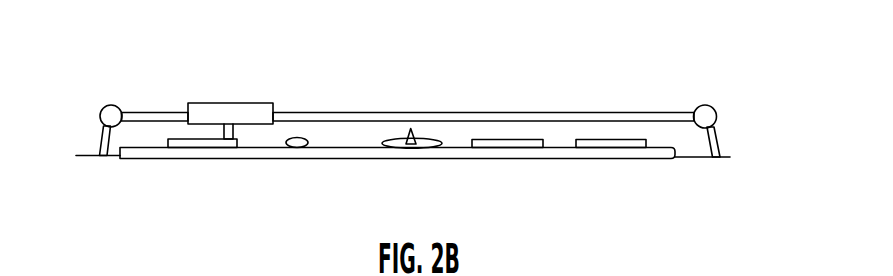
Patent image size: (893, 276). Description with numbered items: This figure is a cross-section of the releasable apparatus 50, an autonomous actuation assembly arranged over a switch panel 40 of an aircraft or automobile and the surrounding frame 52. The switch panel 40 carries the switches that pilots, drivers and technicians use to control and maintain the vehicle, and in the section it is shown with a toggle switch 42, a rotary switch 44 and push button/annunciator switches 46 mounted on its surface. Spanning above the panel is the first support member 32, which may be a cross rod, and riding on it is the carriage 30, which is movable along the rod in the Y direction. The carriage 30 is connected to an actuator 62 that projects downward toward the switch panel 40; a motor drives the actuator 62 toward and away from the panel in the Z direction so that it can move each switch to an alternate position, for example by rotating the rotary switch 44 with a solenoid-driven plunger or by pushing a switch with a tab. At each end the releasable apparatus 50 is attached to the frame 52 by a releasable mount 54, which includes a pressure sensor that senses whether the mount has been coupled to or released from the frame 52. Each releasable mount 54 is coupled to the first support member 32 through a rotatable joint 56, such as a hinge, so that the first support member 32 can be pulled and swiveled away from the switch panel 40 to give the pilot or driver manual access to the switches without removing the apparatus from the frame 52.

The releasable apparatus 50 is at (66, 30).
The carriage 30 is at (212, 103).
The first support member 32 is at (333, 113).
The switch panel 40 is at (153, 158).
The toggle switch 42 is at (292, 148).
The rotary switch 44 is at (393, 148).
The push button/annunciator switch 46 is at (610, 148).
The frame 52 is at (698, 157).
The releasable mount 54 is at (103, 137).
The rotatable joint 56 is at (712, 107).
The actuator 62 is at (223, 139).